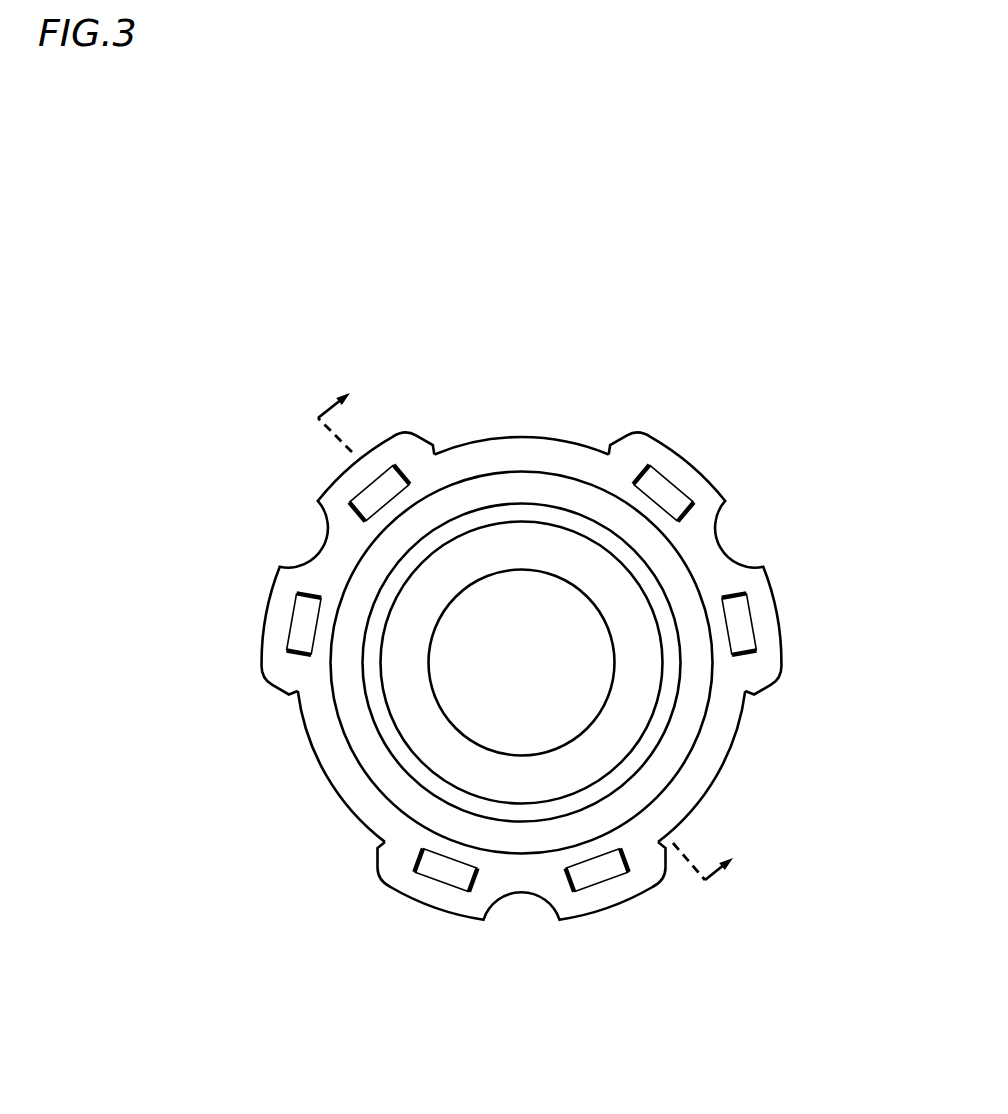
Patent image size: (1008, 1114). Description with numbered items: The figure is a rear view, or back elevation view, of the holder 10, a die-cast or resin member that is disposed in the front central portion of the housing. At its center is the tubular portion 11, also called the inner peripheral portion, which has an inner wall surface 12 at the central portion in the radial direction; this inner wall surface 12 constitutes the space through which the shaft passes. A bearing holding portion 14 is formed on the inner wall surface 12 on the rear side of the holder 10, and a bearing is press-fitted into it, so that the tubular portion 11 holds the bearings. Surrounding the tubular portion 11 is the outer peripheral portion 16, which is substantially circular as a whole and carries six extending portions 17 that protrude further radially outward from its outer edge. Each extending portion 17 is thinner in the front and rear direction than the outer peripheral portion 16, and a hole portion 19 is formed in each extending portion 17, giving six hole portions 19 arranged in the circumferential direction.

The holder 10 is at (168, 183).
The tubular portion 11 is at (538, 483).
The inner wall surface 12 is at (506, 740).
The bearing holding portion 14 is at (536, 789).
The outer peripheral portion 16 is at (316, 785).
The extending portion 17 is at (363, 480).
The hole portion 19 is at (388, 492).